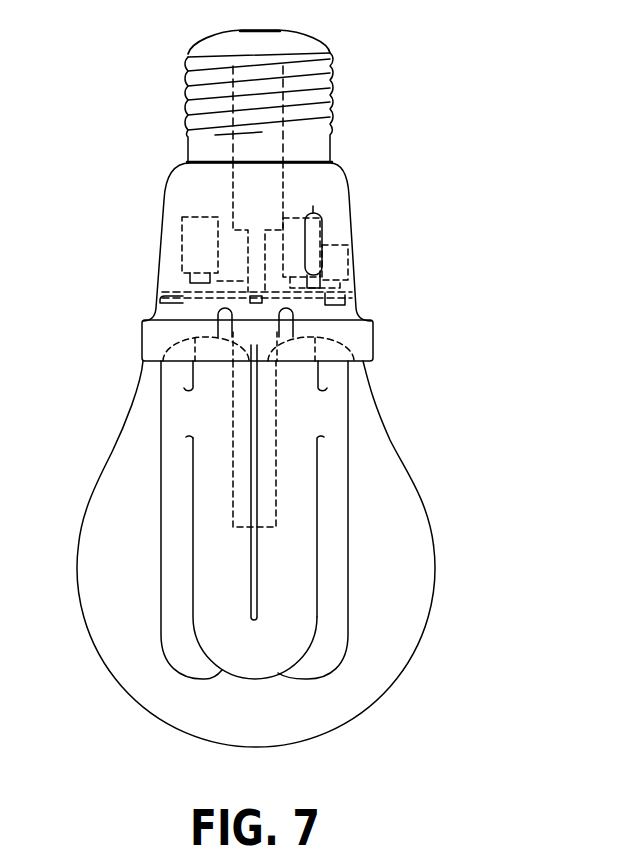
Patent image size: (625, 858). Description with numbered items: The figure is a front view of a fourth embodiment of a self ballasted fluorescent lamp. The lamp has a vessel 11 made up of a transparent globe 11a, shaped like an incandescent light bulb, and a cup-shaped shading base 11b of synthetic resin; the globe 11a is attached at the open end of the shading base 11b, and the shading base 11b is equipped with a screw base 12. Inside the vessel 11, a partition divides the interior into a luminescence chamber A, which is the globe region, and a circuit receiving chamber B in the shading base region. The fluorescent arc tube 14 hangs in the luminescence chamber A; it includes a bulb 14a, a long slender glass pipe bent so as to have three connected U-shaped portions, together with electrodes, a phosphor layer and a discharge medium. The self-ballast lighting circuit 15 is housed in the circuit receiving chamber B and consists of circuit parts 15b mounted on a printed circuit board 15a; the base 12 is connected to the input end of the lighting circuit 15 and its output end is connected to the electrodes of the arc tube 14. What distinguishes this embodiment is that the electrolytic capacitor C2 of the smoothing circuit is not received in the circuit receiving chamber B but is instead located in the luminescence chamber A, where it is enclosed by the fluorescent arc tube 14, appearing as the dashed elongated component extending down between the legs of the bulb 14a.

The vessel 11 is at (282, 533).
The transparent globe 11a is at (250, 554).
The shading base 11b is at (165, 222).
The base 12 is at (333, 92).
The fluorescent arc tube 14 is at (265, 512).
The bulb 14a is at (290, 588).
The self-ballast lighting circuit 15 is at (238, 208).
The printed circuit board 15a is at (186, 303).
The circuit parts 15b is at (194, 201).
The luminescence chamber A is at (378, 448).
The circuit receiving chamber B is at (338, 228).
The electrolytic capacitor C2 is at (233, 468).